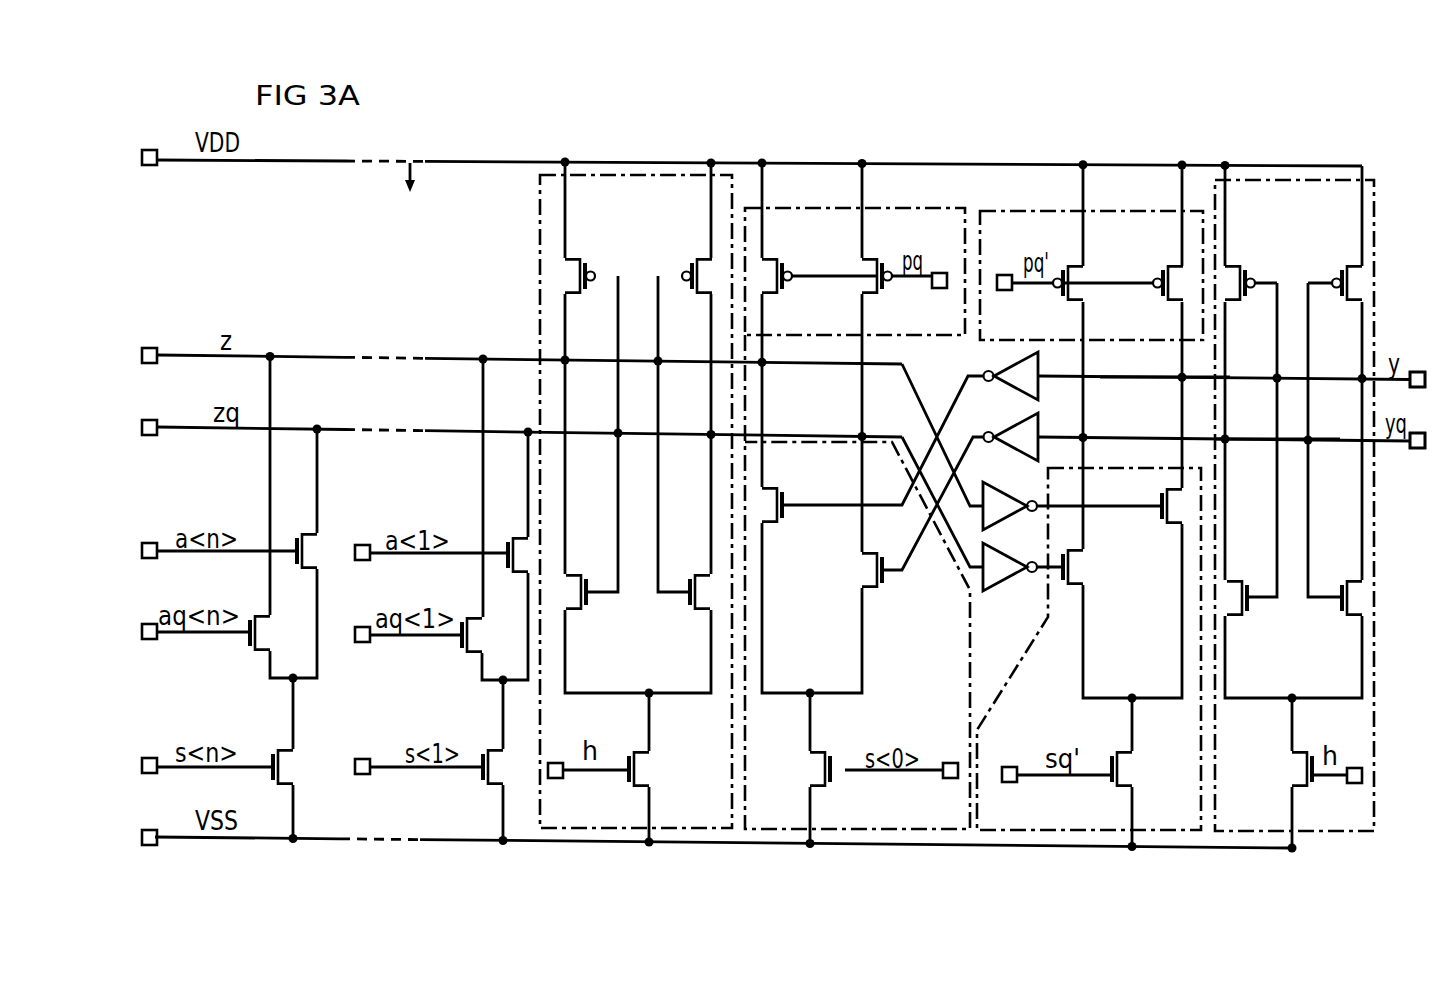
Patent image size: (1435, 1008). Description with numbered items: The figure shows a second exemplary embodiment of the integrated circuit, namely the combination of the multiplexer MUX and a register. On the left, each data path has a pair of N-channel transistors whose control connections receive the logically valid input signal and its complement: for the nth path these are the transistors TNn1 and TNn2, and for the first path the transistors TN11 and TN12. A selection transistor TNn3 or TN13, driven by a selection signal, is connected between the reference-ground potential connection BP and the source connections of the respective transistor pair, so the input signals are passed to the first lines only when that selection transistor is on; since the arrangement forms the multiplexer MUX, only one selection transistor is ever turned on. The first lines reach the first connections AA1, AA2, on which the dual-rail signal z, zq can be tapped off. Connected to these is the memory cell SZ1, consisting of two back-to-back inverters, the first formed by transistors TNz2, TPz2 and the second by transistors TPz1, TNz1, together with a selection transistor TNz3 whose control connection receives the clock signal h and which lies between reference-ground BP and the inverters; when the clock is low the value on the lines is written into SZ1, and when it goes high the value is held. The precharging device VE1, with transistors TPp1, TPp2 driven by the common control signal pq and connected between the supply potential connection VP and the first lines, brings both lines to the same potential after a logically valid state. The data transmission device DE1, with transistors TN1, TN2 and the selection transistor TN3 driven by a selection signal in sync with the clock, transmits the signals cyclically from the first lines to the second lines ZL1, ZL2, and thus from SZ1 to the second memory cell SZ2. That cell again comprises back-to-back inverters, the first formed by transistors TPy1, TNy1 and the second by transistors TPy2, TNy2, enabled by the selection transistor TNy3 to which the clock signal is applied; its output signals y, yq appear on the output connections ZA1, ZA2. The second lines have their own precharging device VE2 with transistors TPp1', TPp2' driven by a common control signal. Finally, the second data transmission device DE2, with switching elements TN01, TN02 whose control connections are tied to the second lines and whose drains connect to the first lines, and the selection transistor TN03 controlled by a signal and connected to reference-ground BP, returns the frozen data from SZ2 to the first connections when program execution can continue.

The multiplexer MUX is at (412, 161).
The reference-ground potential connection BP is at (150, 150).
The supply potential connection VP is at (150, 830).
The first connection AA1 is at (150, 348).
The first connection AA2 is at (150, 420).
The N-channel transistor TNn1 is at (292, 538).
The N-channel transistor TNn2 is at (248, 622).
The selection transistor TNn3 is at (270, 778).
The N-channel transistor TN11 is at (460, 642).
The N-channel transistor TN12 is at (505, 560).
The selection transistor TN13 is at (480, 778).
The memory cell SZ1 is at (663, 175).
The P-channel transistor TPz1 is at (690, 262).
The P-channel transistor TPz2 is at (594, 264).
The N-channel transistor TNz1 is at (688, 608).
The N-channel transistor TNz2 is at (590, 602).
The selection transistor TNz3 is at (625, 786).
The precharging device VE1 is at (798, 207).
The P-channel precharging transistor TPp1 is at (907, 253).
The P-channel precharging transistor TPp2 is at (807, 261).
The second data transmission device DE2 is at (897, 829).
The switching element TN01 is at (882, 590).
The switching element TN02 is at (780, 524).
The selection transistor TN03 is at (835, 790).
The precharging device VE2 is at (1003, 210).
The precharging transistor TPp1' is at (1136, 265).
The precharging transistor TPp2' is at (1037, 259).
The data transmission device DE1 is at (1025, 831).
The transistor TN1 is at (1165, 526).
The transistor TN2 is at (1080, 568).
The selection transistor TN3 is at (1105, 790).
The second memory cell SZ2 is at (1338, 833).
The P-channel transistor TPy1 is at (1343, 272).
The P-channel transistor TPy2 is at (1254, 268).
The N-channel transistor TNy1 is at (1340, 612).
The N-channel transistor TNy2 is at (1250, 612).
The selection transistor TNy3 is at (1305, 772).
The second line ZL1 is at (1135, 381).
The second line ZL2 is at (1263, 436).
The output connection ZA1 is at (1420, 370).
The output connection ZA2 is at (1414, 448).